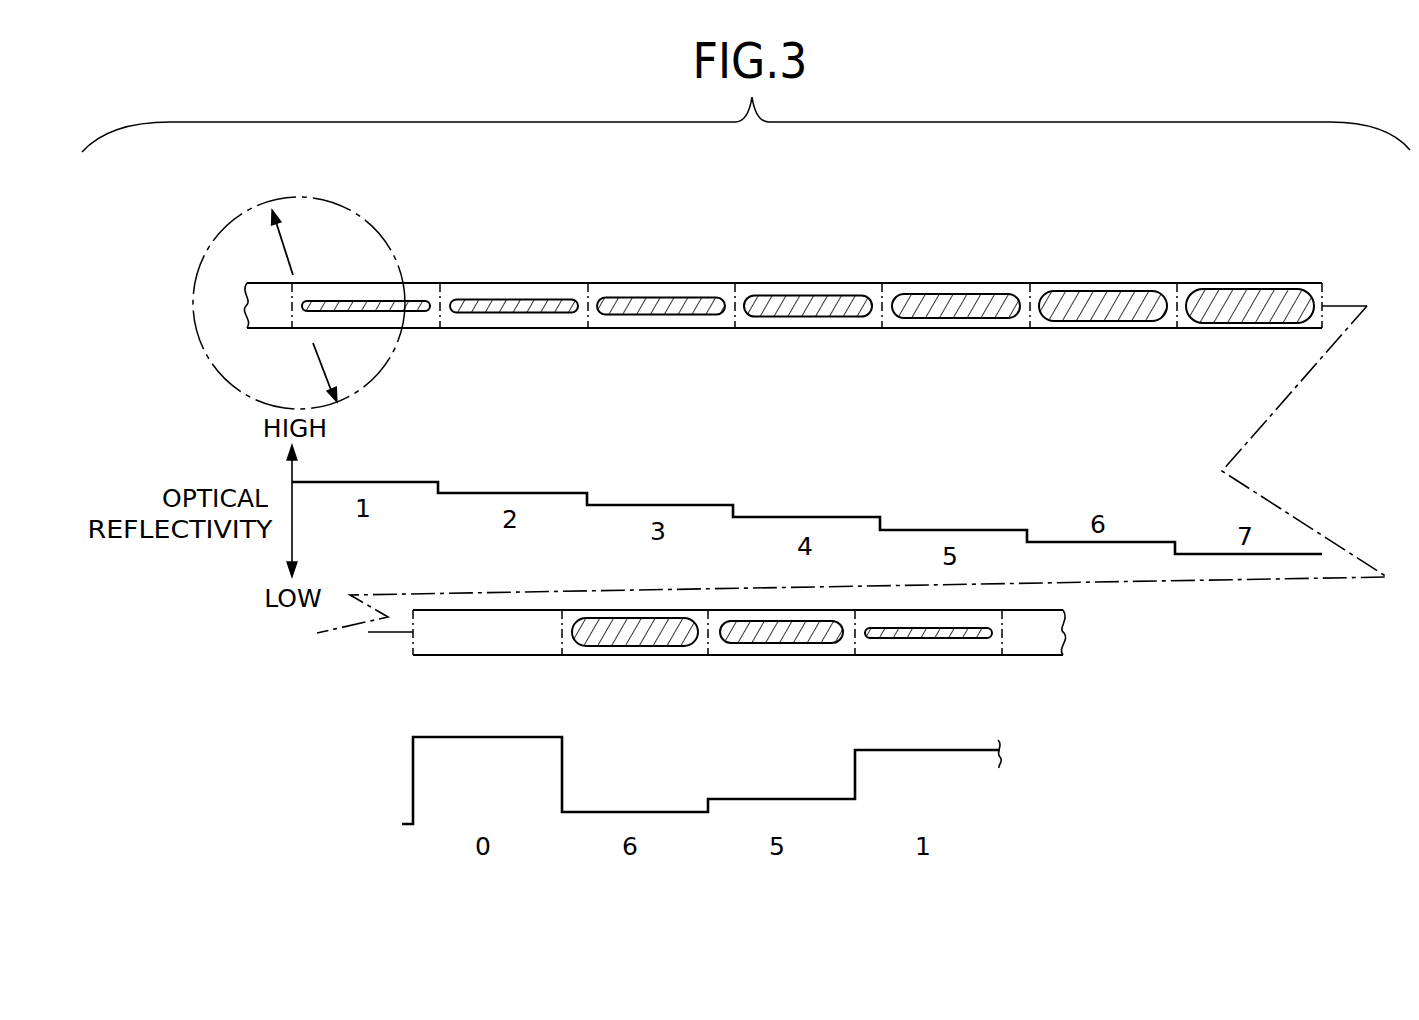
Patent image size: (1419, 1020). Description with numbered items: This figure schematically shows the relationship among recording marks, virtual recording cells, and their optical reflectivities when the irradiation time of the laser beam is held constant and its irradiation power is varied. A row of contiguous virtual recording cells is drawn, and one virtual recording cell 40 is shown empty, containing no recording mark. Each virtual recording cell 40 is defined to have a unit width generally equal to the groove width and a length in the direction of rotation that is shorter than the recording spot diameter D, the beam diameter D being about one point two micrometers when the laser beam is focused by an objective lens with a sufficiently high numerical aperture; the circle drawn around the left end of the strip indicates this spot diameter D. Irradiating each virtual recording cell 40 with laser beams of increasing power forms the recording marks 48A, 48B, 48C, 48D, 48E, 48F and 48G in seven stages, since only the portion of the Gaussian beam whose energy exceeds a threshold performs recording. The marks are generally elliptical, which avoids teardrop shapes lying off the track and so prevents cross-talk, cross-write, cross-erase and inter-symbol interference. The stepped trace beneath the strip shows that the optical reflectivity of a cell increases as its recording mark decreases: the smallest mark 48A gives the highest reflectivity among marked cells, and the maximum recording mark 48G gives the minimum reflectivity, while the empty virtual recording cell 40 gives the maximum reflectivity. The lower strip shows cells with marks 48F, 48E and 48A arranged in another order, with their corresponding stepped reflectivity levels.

The recording mark 48A is at (407, 301).
The recording mark 48B is at (530, 299).
The recording mark 48C is at (658, 297).
The recording mark 48D is at (805, 295).
The recording mark 48E is at (950, 294).
The recording mark 48F is at (1103, 291).
The recording mark 48G is at (1245, 289).
The virtual recording cell 40 is at (562, 657).
The recording spot diameter D is at (280, 243).